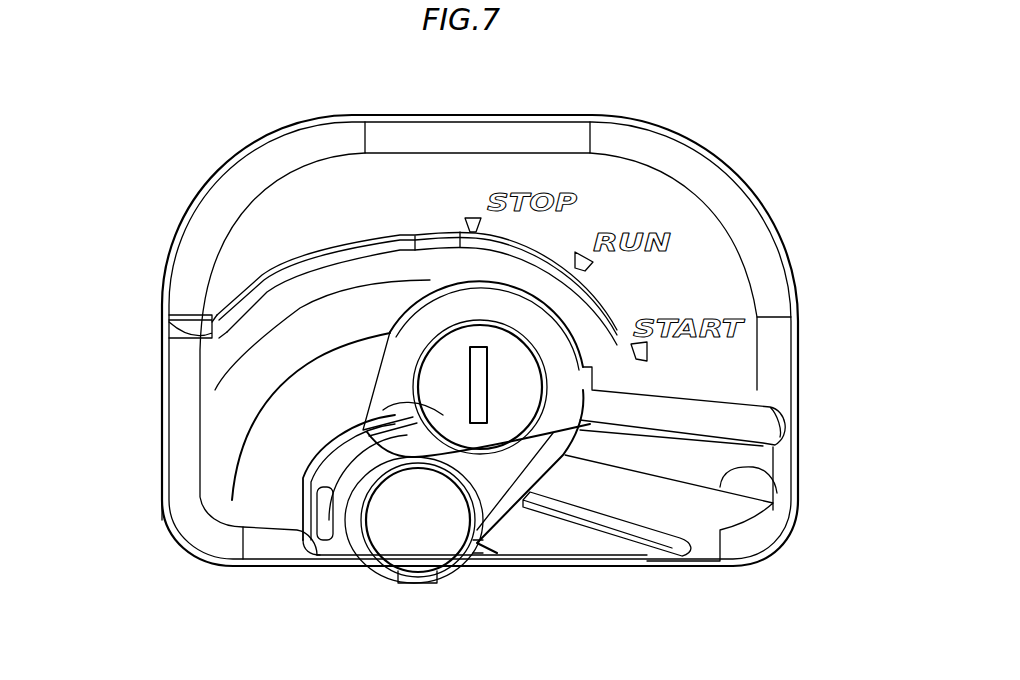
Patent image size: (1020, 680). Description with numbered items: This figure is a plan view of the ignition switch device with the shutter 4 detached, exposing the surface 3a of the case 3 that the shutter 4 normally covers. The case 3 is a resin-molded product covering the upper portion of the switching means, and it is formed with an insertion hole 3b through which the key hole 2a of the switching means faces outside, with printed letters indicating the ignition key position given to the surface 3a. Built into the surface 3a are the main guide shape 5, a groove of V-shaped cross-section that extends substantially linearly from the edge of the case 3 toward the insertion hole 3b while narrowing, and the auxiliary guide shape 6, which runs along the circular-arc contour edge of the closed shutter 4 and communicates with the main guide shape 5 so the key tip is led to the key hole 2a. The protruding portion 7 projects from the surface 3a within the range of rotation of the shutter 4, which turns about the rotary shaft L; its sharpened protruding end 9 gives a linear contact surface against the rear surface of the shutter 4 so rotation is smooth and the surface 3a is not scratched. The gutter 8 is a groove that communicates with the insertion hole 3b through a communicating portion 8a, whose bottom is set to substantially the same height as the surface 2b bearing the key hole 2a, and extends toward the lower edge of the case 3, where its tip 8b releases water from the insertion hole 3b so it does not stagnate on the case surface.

The key hole 2a is at (478, 390).
The surface having the key hole 2b is at (513, 383).
The case 3 is at (798, 262).
The surface of the case 3a is at (265, 243).
The insertion hole 3b is at (487, 345).
The shutter 4 is at (262, 378).
The main guide shape 5 is at (740, 487).
The auxiliary guide shape 6 is at (463, 263).
The protruding portion 7 is at (283, 483).
The gutter 8 is at (232, 503).
The communicating portion 8a is at (443, 415).
The tip of the gutter 8b is at (333, 540).
The protruding end 9 is at (158, 494).
The rotary shaft L is at (417, 518).